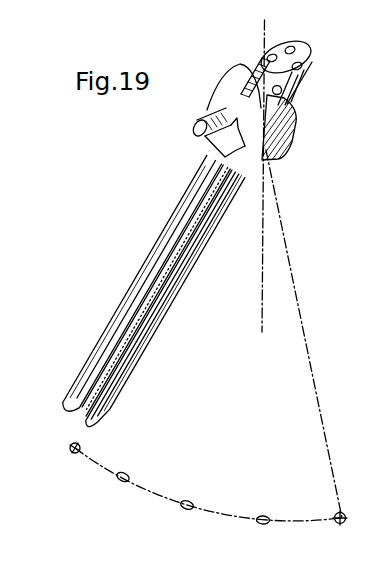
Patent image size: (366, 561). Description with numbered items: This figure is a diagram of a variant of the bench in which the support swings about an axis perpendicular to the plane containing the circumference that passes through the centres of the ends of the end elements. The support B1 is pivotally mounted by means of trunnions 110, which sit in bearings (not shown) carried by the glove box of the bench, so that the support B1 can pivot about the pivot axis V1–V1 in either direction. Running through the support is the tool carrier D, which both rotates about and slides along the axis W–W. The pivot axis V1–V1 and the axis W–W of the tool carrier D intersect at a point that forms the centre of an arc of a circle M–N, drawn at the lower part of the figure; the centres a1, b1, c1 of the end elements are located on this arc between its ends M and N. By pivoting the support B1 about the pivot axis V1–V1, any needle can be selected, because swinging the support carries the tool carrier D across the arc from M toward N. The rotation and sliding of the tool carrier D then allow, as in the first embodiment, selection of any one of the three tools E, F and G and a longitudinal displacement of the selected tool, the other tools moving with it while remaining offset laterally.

The trunnions 110 is at (204, 121).
The tool carrier D is at (254, 63).
The axis of rotation and sliding of the tool carrier W is at (75, 448).
The pivot axis of the support V1 is at (150, 158).
The support B1 is at (291, 133).
The tool E is at (111, 332).
The tool G is at (101, 373).
The tool F is at (143, 381).
The end of arc of circle M–N M is at (66, 444).
The centre of end element a1 is at (63, 451).
The centre of end element b1 is at (125, 463).
The centre of end element c1 is at (185, 492).
The end of arc of circle M– N is at (345, 509).